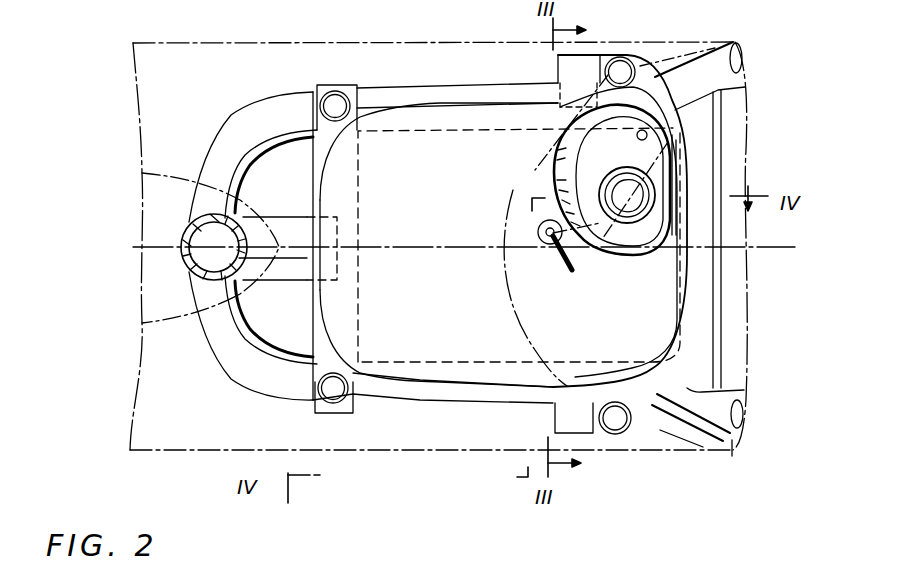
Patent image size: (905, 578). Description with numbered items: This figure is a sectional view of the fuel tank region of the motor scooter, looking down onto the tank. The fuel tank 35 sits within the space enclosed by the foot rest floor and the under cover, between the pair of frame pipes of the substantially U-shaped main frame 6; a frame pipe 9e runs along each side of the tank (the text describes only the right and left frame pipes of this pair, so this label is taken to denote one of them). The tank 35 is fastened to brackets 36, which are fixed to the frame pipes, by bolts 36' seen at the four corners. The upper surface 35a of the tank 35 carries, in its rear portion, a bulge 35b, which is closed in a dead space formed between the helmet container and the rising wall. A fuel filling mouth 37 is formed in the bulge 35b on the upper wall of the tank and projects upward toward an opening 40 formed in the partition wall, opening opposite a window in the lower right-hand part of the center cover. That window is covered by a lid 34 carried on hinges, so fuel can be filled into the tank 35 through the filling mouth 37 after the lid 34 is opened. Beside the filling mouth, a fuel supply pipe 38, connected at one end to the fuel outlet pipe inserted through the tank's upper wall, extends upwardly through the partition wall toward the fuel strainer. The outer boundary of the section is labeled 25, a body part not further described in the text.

The main frame 6 is at (228, 383).
The rail of mounting plate 9e is at (487, 88).
The housing body 25 is at (407, 451).
The lid 34 is at (628, 133).
The fuel tank 35 is at (427, 108).
The upper surface of the tank 35a is at (519, 245).
The bulge 35b is at (643, 257).
The brackets 36 is at (467, 270).
The bolts 36' is at (497, 232).
The fuel filling mouth 37 is at (652, 194).
The fuel supply pipe 38 is at (557, 257).
The opening 40 is at (603, 133).